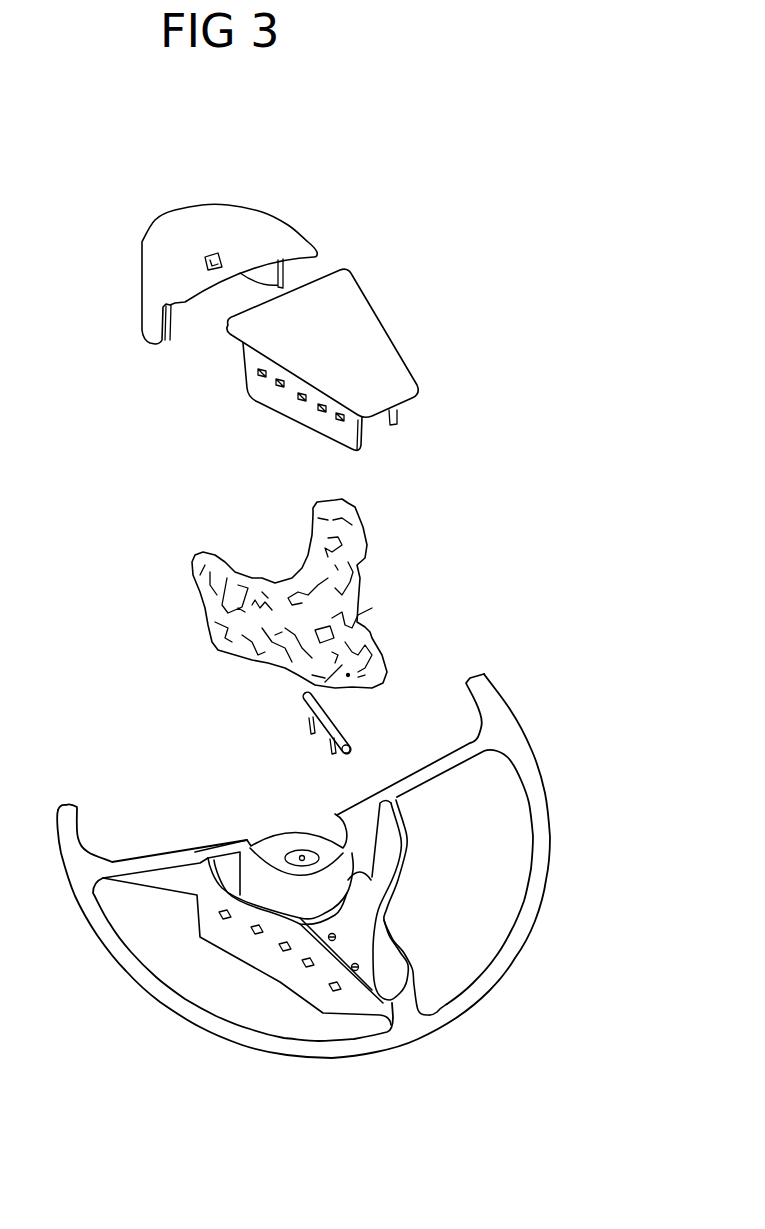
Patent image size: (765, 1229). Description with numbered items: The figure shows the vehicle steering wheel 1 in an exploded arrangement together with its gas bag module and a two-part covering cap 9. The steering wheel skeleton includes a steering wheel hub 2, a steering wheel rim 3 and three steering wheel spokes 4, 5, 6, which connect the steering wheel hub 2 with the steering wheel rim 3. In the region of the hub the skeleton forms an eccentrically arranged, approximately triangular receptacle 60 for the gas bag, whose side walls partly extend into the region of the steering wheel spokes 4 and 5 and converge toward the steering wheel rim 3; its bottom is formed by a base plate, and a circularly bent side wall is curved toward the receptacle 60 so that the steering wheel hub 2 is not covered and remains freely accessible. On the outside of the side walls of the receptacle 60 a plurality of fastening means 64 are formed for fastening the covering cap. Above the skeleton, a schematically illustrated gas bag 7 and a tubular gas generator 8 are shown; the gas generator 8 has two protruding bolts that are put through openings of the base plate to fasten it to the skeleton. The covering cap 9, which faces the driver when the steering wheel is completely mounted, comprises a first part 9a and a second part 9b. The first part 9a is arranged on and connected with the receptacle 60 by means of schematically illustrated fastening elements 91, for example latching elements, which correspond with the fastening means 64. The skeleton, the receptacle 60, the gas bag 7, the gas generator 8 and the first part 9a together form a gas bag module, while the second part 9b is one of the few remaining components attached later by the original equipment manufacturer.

The vehicle steering wheel 1 is at (516, 465).
The steering wheel hub 2 is at (282, 842).
The steering wheel rim 3 is at (537, 900).
The steering wheel spoke 4 is at (183, 853).
The steering wheel spoke 5 is at (475, 755).
The steering wheel spoke 6 is at (377, 927).
The receptacle 60 is at (366, 899).
The fastening means 64 is at (287, 948).
The gas bag 7 is at (360, 568).
The gas generator 8 is at (330, 723).
The covering cap 9 is at (358, 242).
The first part of the covering cap 9a is at (363, 330).
The second part of the covering cap 9b is at (240, 220).
The fastening elements 91 is at (300, 397).